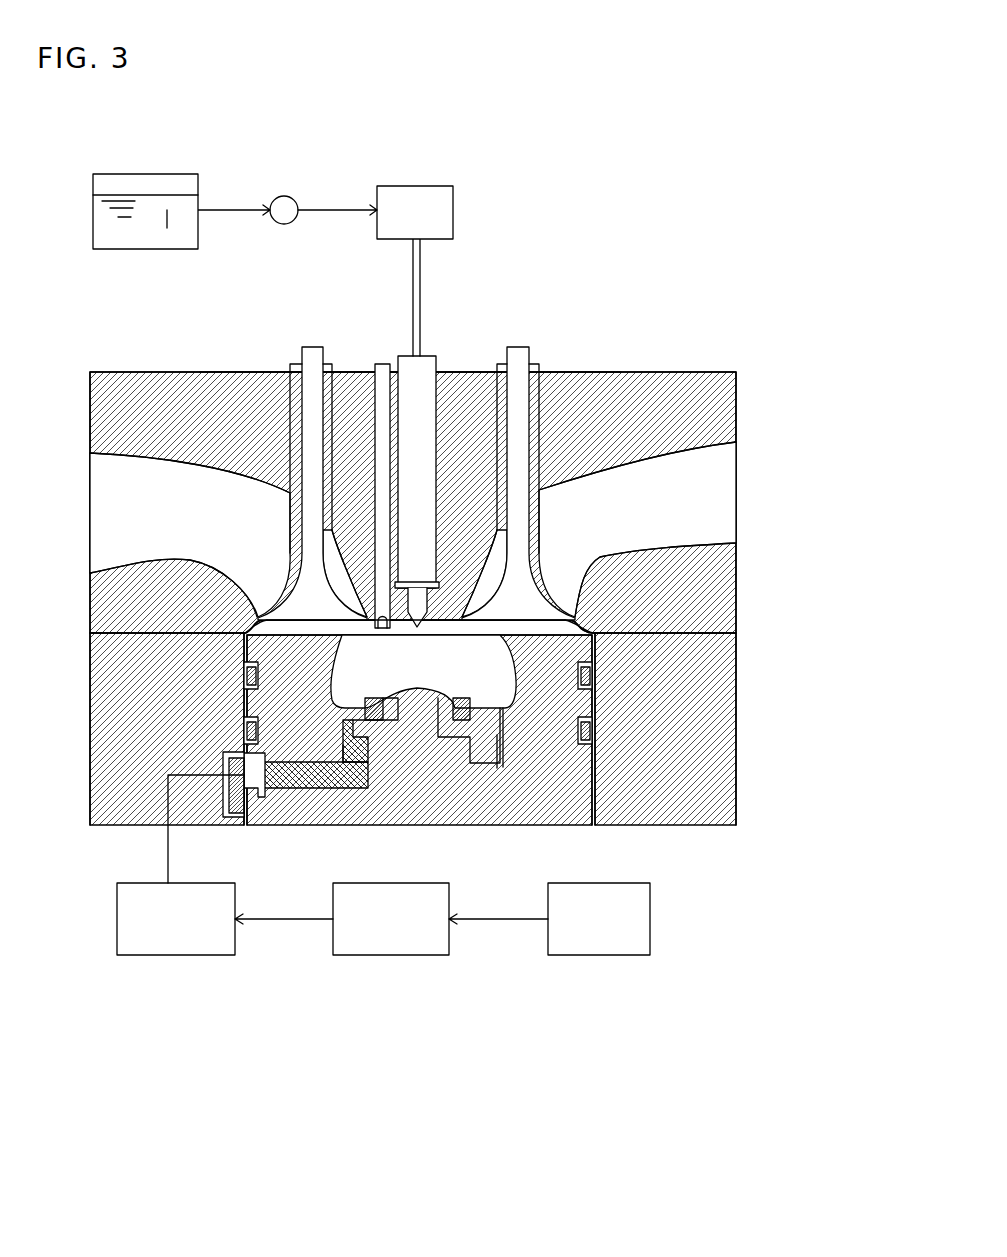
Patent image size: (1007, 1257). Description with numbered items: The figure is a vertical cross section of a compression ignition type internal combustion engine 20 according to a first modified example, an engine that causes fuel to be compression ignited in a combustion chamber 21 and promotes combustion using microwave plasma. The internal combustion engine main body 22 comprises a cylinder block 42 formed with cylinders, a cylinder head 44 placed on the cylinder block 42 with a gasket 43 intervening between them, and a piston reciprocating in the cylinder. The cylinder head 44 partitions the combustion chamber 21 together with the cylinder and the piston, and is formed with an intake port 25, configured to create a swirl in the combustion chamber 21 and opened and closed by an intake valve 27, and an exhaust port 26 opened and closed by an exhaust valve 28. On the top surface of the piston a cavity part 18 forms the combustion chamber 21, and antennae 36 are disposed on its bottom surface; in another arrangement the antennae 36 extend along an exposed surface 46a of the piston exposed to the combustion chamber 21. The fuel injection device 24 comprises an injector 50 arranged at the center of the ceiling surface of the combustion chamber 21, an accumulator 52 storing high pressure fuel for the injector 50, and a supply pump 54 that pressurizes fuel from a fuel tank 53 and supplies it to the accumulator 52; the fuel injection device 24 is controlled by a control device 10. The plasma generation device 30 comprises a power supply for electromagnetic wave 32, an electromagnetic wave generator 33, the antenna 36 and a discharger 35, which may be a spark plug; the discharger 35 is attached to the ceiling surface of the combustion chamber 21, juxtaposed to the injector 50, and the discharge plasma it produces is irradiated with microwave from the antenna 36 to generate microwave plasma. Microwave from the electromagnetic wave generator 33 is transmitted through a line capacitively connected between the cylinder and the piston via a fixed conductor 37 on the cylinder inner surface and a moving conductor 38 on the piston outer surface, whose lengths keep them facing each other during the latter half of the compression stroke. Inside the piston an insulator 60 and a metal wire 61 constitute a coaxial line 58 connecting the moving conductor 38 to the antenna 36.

The control device 10 is at (600, 956).
The cavity part 18 is at (338, 690).
The internal combustion engine 20 is at (632, 214).
The combustion chamber 21 is at (441, 671).
The internal combustion engine main body 22 is at (701, 364).
The fuel injection device 24 is at (376, 87).
The intake port 25 is at (123, 477).
The exhaust port 26 is at (708, 488).
The intake valve 27 is at (296, 358).
The exhaust valve 28 is at (532, 357).
The plasma generation device 30 is at (305, 1088).
The power supply for electromagnetic wave 32 is at (385, 956).
The electromagnetic wave generator 33 is at (170, 956).
The discharger 35 is at (373, 358).
The antenna 36 is at (383, 698).
The fixed conductor 37 is at (235, 812).
The moving conductor 38 is at (265, 795).
The cylinder block 42 is at (740, 700).
The gasket 43 is at (740, 632).
The cylinder head 44 is at (610, 371).
The exposed surface 46a is at (547, 640).
The injector 50 is at (410, 352).
The accumulator 52 is at (405, 186).
The fuel tank 53 is at (125, 174).
The supply pump 54 is at (280, 196).
The coaxial line 58 is at (307, 760).
The insulator 60 is at (347, 780).
The metal wire 61 is at (372, 762).